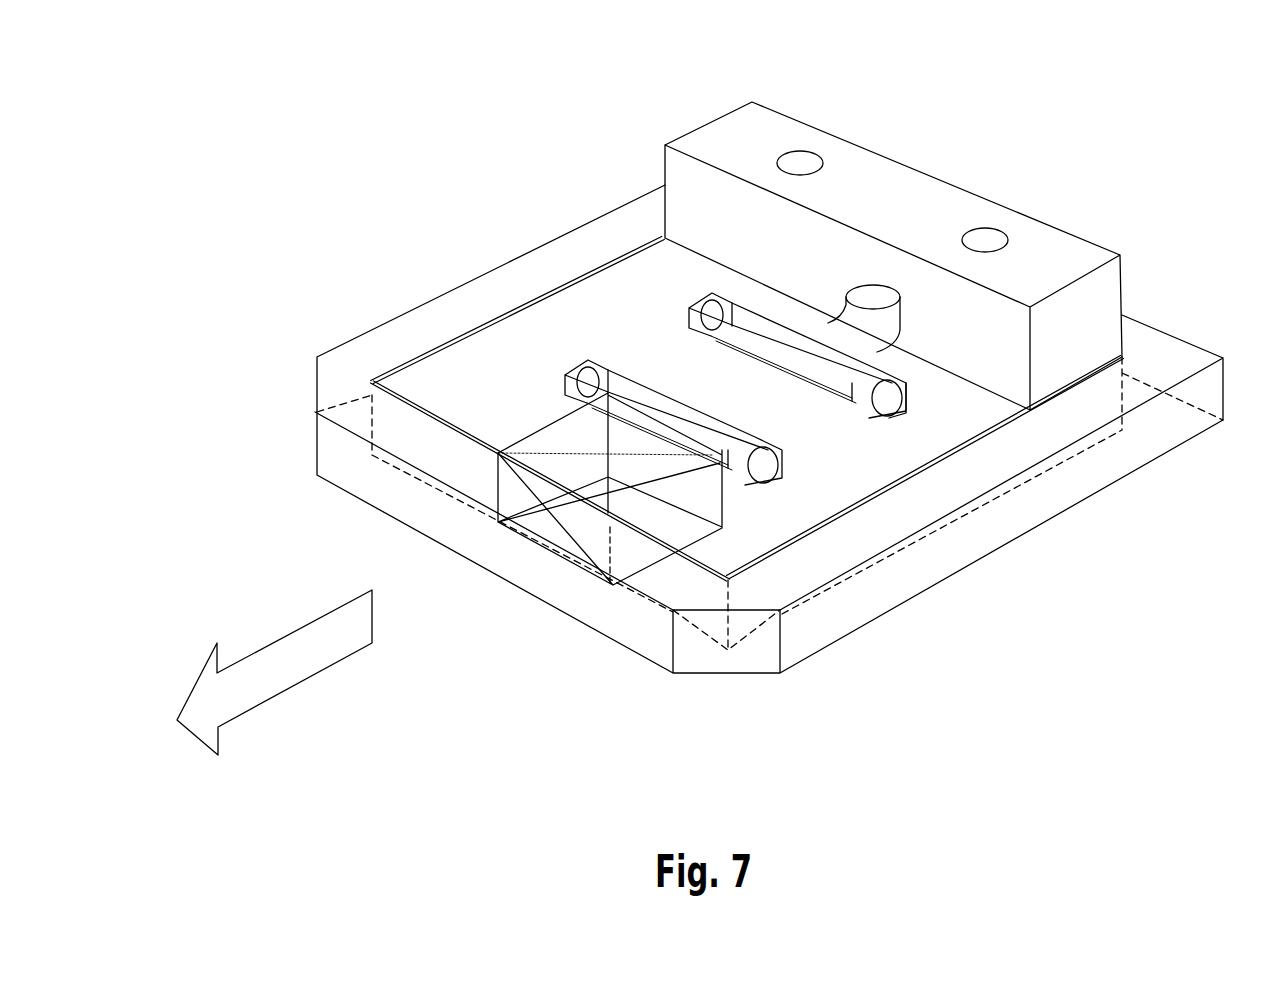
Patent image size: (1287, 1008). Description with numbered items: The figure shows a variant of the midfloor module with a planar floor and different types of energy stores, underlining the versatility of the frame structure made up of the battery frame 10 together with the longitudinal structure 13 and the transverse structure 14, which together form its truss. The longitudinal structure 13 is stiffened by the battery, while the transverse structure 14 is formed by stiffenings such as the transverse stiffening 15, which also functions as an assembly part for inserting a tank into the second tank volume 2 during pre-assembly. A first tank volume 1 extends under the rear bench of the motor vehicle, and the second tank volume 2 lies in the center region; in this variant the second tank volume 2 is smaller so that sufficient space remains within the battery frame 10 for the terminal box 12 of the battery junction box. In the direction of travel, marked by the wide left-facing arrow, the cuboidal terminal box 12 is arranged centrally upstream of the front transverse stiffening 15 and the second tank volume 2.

The first tank volume 1 is at (775, 140).
The second tank volume 2 is at (740, 378).
The battery frame 10 is at (365, 485).
The terminal box 12 is at (548, 530).
The longitudinal structure 13 is at (668, 353).
The transverse structure 14 is at (563, 360).
The transverse stiffening 15 is at (910, 420).